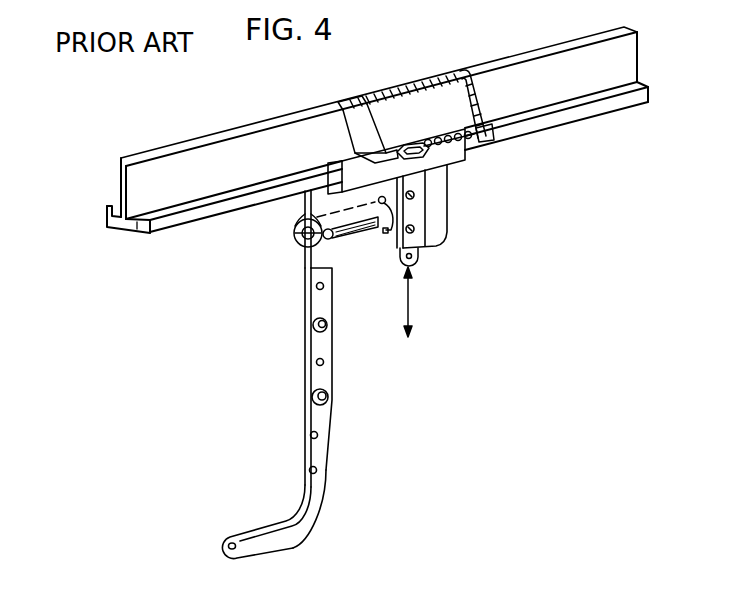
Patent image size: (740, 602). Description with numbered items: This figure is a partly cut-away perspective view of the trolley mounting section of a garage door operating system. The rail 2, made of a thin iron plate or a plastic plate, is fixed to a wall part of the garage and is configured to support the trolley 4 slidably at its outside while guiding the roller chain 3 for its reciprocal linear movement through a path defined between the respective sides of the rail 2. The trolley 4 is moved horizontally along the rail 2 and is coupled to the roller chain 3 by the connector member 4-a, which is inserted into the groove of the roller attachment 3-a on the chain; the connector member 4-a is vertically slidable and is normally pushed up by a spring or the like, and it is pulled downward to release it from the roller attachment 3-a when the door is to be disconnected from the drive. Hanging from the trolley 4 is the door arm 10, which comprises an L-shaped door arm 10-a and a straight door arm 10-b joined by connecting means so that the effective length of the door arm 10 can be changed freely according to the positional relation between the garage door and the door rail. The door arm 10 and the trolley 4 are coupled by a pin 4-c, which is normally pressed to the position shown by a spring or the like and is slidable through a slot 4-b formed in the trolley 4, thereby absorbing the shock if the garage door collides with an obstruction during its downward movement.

The rail 2 is at (234, 134).
The roller chain 3 is at (482, 143).
The roller attachment 3-a is at (370, 110).
The trolley 4 is at (447, 212).
The connector member 4-a is at (420, 258).
The slot 4-b is at (358, 236).
The pin 4-c is at (304, 257).
The door arm 10 is at (296, 404).
The L-shaped door arm 10-a is at (292, 546).
The straight door arm 10-b is at (309, 313).